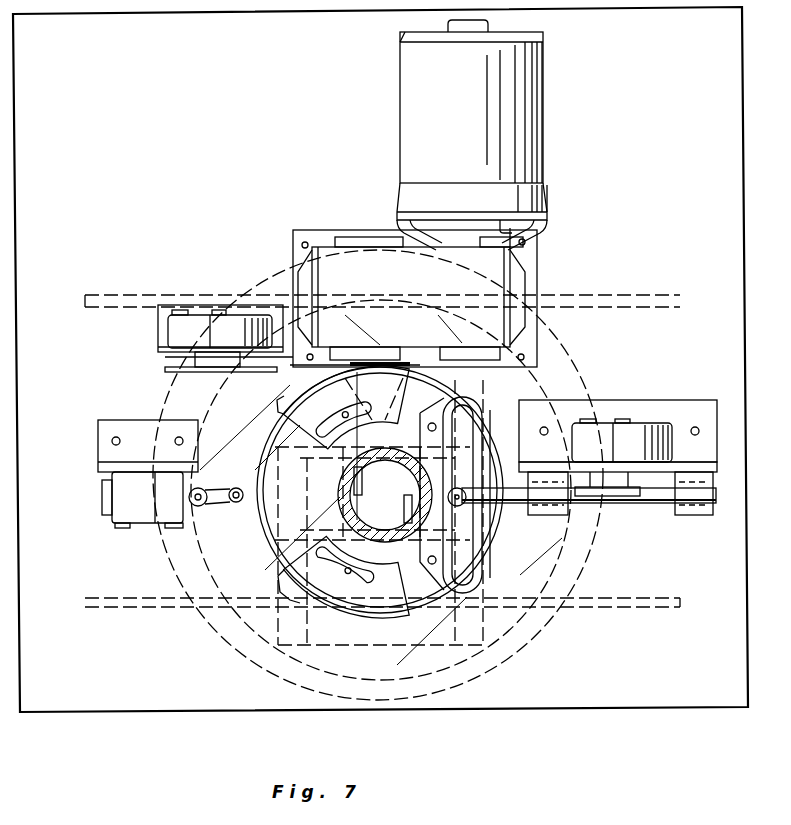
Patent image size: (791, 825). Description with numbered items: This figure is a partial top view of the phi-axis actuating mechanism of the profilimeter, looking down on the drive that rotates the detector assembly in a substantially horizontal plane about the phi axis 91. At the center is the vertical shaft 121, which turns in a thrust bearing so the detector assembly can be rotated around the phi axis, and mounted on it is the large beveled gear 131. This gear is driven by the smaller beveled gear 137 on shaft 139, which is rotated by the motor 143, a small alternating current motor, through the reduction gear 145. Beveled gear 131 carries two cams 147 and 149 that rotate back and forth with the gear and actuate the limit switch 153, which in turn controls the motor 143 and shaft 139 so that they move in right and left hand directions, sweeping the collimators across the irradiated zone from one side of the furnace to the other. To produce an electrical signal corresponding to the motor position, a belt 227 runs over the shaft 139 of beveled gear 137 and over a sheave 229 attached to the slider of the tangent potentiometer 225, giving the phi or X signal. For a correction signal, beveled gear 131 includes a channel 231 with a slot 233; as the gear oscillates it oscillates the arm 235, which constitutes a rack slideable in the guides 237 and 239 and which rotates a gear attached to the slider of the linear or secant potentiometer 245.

The phi axis 91 is at (388, 487).
The vertical shaft 121 is at (382, 522).
The beveled gear 131 is at (262, 545).
The beveled gear 137 is at (356, 406).
The shaft 139 is at (400, 366).
The motor 143 is at (546, 120).
The reduction gear 145 is at (500, 265).
The cam 147 is at (278, 401).
The cam 149 is at (279, 578).
The limit switch 153 is at (150, 527).
The potentiometer 225 is at (215, 302).
The belt 227 is at (277, 380).
The sheave 229 is at (168, 372).
The channel 231 is at (472, 598).
The slot 233 is at (468, 560).
The arm 235 is at (488, 520).
The guide 237 is at (548, 508).
The guide 239 is at (693, 515).
The secant potentiometer 245 is at (645, 393).